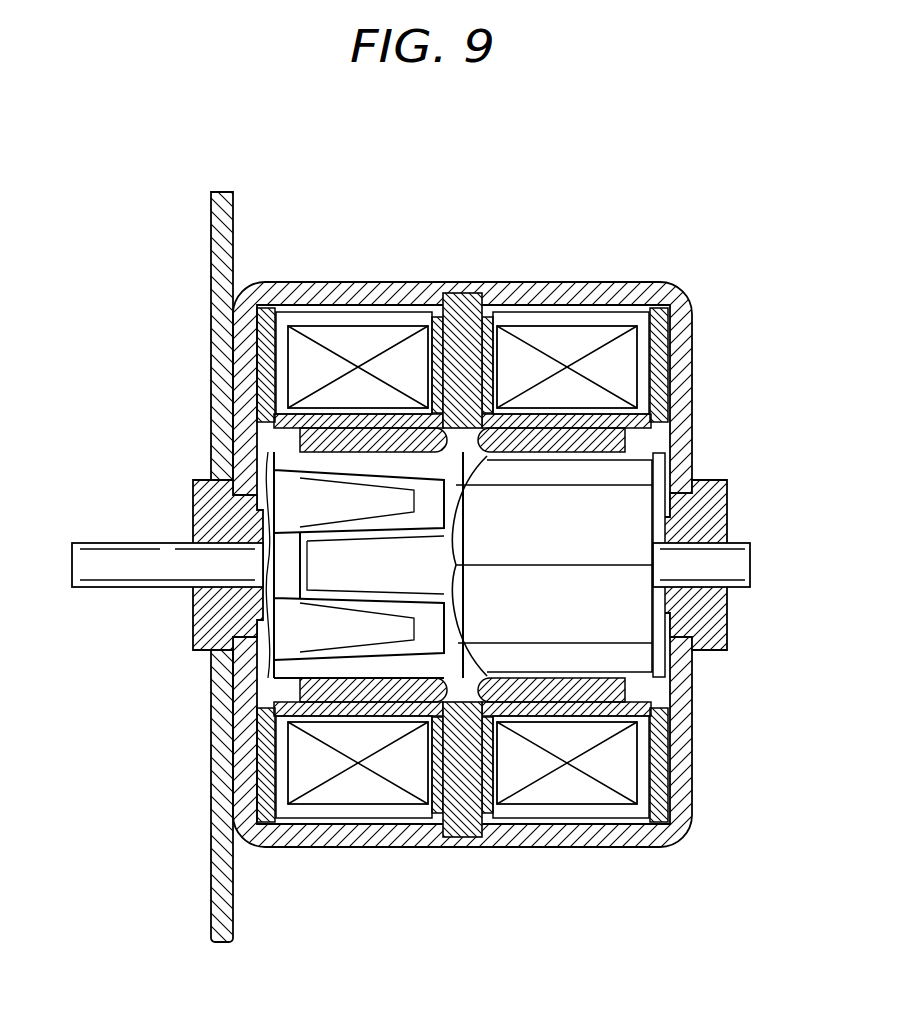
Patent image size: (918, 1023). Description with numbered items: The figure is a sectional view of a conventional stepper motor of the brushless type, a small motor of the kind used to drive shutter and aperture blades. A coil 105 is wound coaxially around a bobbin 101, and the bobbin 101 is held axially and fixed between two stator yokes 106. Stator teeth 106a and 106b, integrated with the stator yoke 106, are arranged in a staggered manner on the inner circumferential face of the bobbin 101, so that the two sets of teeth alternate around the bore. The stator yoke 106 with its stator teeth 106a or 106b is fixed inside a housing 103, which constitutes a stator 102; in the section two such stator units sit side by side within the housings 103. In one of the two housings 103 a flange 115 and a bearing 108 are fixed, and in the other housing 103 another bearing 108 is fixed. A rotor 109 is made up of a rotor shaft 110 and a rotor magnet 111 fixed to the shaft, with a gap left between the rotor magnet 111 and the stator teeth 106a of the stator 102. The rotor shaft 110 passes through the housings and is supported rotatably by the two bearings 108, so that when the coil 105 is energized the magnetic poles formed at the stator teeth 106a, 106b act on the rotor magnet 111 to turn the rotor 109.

The bobbin 101 is at (417, 320).
The stator 102 is at (455, 233).
The housing 103 is at (247, 312).
The coil 105 is at (333, 340).
The stator yoke 106 is at (296, 340).
The stator tooth 106a is at (283, 642).
The stator tooth 106b is at (302, 567).
The bearing 108 is at (200, 495).
The rotor 109 is at (658, 460).
The rotor shaft 110 is at (95, 548).
The rotor magnet 111 is at (622, 628).
The flange 115 is at (220, 192).